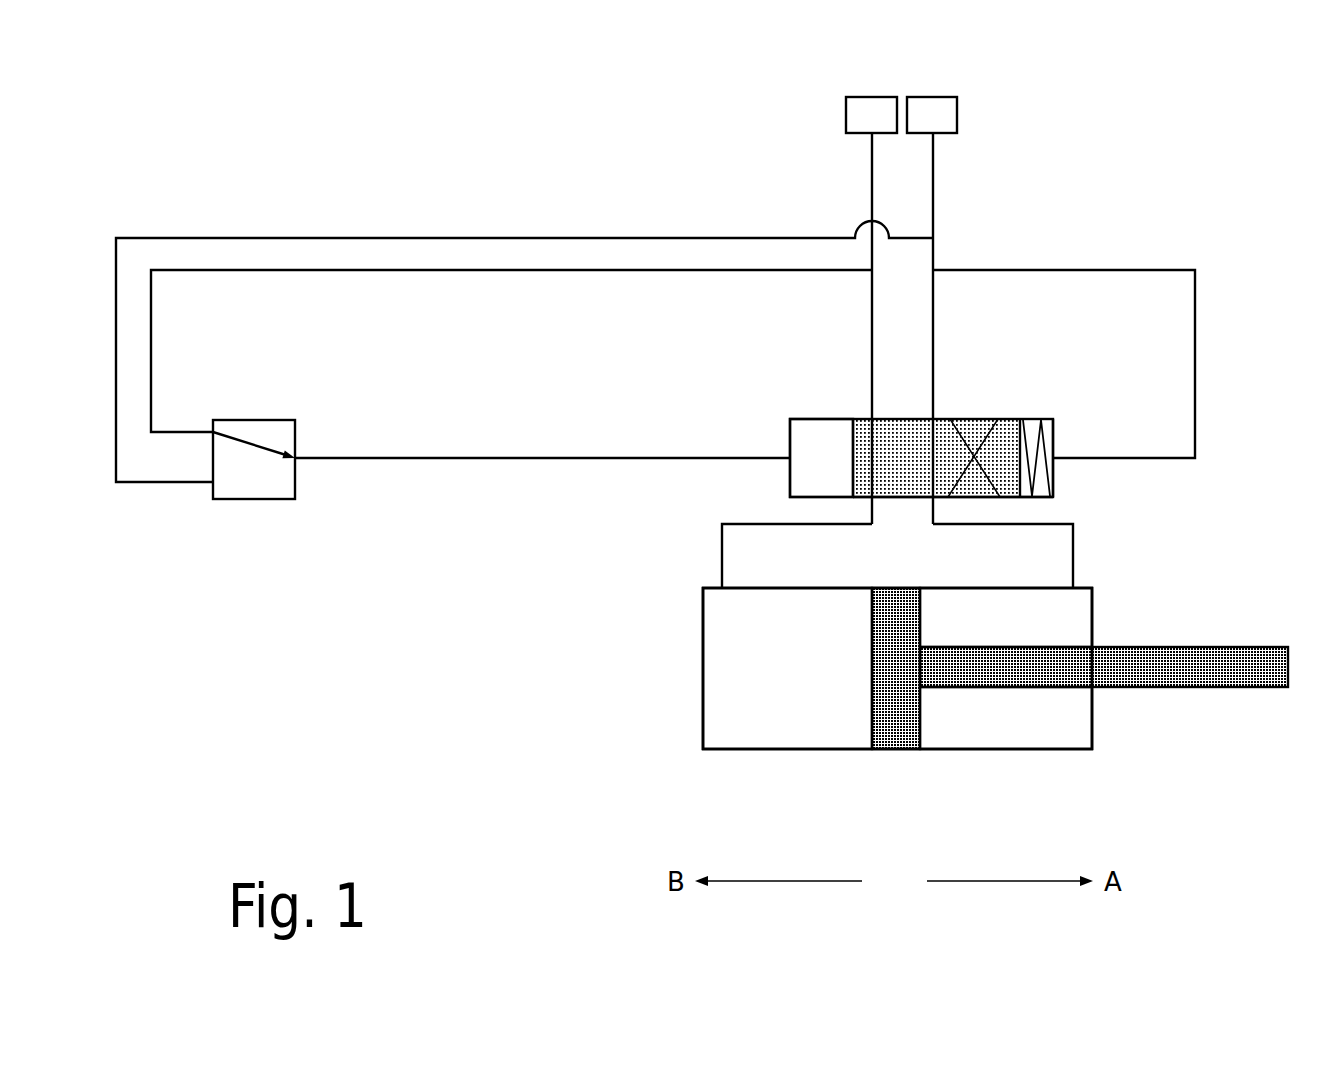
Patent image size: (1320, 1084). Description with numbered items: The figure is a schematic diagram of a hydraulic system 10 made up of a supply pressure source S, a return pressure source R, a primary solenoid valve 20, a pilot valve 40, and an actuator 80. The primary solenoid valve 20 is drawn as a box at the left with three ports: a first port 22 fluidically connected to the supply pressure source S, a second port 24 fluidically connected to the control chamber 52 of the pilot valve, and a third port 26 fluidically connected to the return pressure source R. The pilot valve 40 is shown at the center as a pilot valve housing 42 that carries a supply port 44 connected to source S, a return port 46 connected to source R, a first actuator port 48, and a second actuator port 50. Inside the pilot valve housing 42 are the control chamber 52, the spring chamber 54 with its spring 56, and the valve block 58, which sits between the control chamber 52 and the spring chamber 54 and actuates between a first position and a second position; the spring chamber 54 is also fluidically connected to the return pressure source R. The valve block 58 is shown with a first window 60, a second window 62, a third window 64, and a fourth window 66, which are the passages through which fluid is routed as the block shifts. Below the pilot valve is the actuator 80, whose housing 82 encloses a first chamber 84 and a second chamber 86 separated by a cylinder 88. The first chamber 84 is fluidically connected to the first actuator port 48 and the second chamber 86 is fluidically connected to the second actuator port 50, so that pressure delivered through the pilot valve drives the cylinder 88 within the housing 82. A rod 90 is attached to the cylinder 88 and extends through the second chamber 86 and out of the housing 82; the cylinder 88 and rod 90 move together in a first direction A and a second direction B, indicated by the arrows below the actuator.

The system 10 is at (1173, 158).
The primary solenoid valve 20 is at (260, 420).
The first port 22 is at (213, 432).
The second port 24 is at (300, 455).
The third port 26 is at (213, 486).
The pilot valve 40 is at (980, 428).
The pilot valve housing 42 is at (808, 418).
The supply port 44 is at (876, 436).
The return port 46 is at (942, 428).
The first actuator port 48 is at (873, 500).
The second actuator port 50 is at (936, 500).
The control chamber 52 is at (808, 469).
The spring chamber 54 is at (1045, 422).
The spring 56 is at (1056, 468).
The valve block 58 is at (992, 430).
The first window 60 is at (870, 440).
The second window 62 is at (933, 498).
The third window 64 is at (955, 424).
The fourth window 66 is at (998, 438).
The actuator 80 is at (948, 727).
The housing 82 is at (787, 750).
The first chamber 84 is at (768, 682).
The second chamber 86 is at (993, 629).
The cylinder 88 is at (889, 725).
The rod 90 is at (1208, 668).